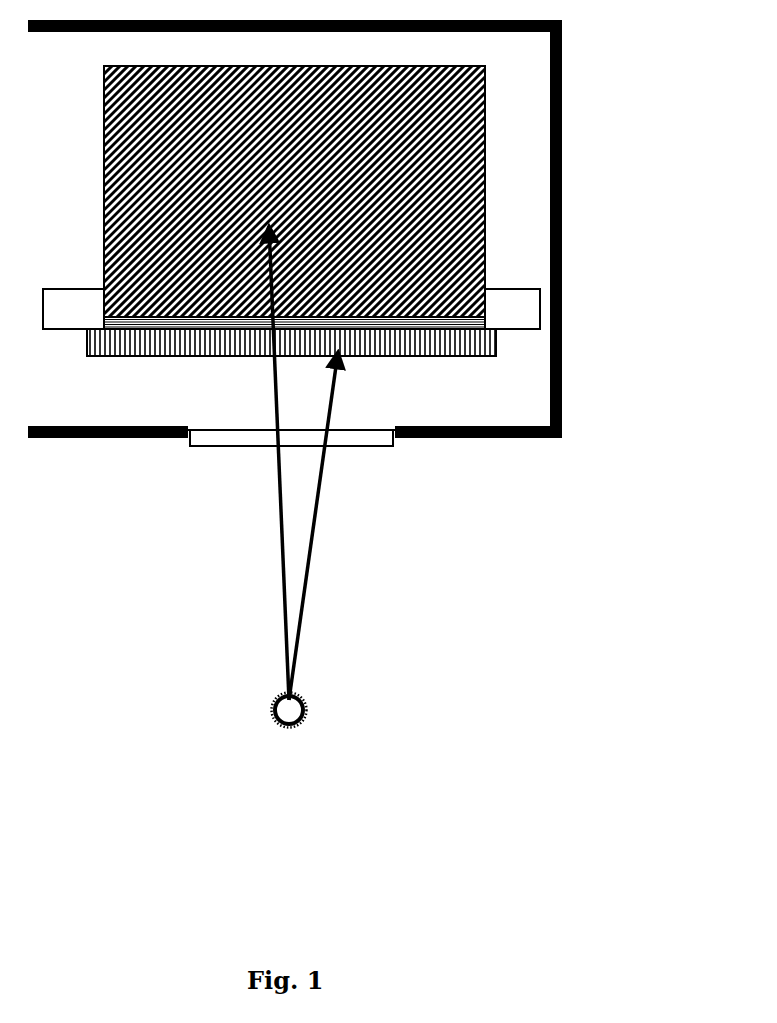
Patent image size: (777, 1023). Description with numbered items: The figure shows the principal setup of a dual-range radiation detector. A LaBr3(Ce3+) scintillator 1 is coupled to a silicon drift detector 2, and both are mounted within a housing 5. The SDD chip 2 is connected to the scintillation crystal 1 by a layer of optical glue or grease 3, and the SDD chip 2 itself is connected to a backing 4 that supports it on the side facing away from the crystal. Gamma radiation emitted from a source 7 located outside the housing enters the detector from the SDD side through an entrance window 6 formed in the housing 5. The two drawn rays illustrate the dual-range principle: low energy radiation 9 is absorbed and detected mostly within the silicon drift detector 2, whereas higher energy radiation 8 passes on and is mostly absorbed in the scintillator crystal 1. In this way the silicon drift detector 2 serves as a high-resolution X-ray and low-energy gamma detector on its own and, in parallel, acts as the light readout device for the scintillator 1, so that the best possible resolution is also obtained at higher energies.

The scintillator 1 is at (365, 177).
The silicon drift detector 2 is at (413, 367).
The optical glue or grease 3 is at (422, 303).
The backing 4 is at (391, 265).
The housing 5 is at (384, 264).
The entrance window 6 is at (462, 524).
The source 7 is at (505, 749).
The higher energy radiation 8 is at (261, 463).
The low energy radiation 9 is at (324, 526).